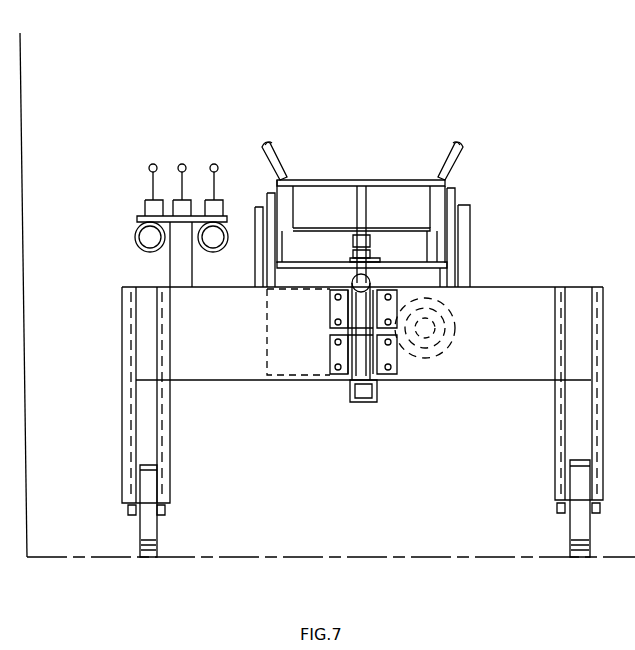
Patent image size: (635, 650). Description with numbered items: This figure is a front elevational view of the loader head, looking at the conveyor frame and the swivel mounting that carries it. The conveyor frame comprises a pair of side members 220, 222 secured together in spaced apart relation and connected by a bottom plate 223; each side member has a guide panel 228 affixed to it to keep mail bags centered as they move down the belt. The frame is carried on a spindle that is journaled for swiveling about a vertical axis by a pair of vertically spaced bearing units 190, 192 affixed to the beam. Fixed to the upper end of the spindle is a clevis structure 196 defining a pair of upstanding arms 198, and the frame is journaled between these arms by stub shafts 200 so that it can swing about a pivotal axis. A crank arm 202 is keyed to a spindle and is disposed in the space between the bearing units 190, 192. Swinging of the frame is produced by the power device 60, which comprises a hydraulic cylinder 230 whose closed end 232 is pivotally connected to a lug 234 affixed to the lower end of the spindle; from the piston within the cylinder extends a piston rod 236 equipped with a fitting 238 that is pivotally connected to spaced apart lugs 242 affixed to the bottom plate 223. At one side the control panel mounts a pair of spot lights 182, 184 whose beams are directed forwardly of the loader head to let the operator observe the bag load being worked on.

The power device 60 is at (323, 365).
The spot light 182 is at (135, 241).
The spot light 184 is at (209, 252).
The bearing unit 190 is at (338, 386).
The bearing unit 192 is at (328, 312).
The clevis structure 196 is at (447, 289).
The upstanding arms 198 is at (276, 219).
The stub shafts 200 is at (282, 192).
The crank arm 202 is at (397, 336).
The side member 220 is at (277, 183).
The side member 222 is at (452, 182).
The bottom plate 223 is at (440, 277).
The guide panel 228 is at (272, 160).
The hydraulic cylinder 230 is at (384, 345).
The closed end 232 is at (376, 376).
The lug 234 is at (356, 386).
The piston rod 236 is at (450, 277).
The fitting 238 is at (362, 230).
The lugs 242 is at (335, 246).